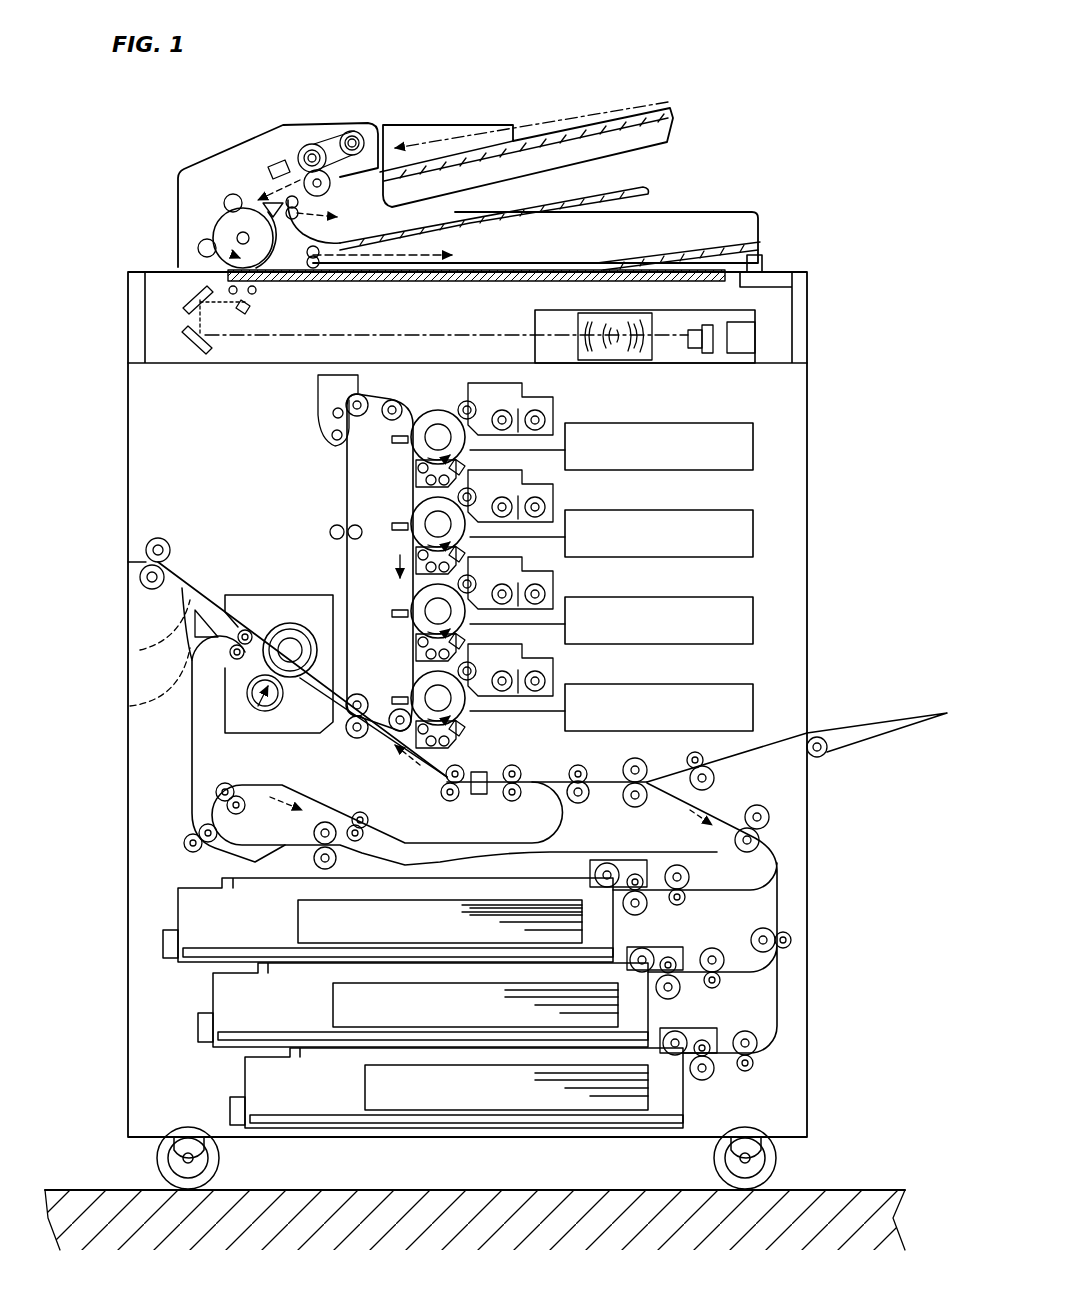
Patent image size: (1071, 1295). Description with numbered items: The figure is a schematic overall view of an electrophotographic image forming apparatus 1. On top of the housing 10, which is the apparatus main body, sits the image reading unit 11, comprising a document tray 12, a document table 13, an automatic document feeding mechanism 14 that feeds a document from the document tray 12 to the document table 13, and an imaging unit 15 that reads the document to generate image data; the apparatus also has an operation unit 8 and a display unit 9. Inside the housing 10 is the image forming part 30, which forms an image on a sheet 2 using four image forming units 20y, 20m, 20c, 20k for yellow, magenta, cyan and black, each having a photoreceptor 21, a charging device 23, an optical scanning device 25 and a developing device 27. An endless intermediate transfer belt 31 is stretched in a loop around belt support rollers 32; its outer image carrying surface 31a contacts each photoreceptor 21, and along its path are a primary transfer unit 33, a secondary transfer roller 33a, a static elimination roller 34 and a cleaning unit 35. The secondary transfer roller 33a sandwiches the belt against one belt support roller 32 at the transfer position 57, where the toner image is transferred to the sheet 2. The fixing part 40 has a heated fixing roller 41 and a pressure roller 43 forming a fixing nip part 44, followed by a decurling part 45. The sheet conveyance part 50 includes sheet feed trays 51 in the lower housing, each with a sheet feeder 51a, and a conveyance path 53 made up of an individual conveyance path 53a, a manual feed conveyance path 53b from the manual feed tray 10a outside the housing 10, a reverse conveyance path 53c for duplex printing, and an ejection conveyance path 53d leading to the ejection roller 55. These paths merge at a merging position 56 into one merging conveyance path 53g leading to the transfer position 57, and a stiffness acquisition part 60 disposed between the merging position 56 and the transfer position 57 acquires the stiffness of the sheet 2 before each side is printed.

The image forming apparatus 1 is at (53, 50).
The image reading unit 11 is at (492, 165).
The automatic document feeding mechanism 14 is at (236, 180).
The document tray 12 is at (558, 132).
The document table 13 is at (636, 248).
The operation unit 8 is at (782, 247).
The display unit 9 is at (778, 267).
The imaging unit 15 is at (795, 316).
The image forming part 30 is at (564, 560).
The image forming unit 20y is at (627, 437).
The image forming unit 20m is at (775, 530).
The image forming unit 20c is at (775, 618).
The image forming unit 20k is at (775, 706).
The photoreceptor 21 is at (446, 412).
The charging device 23 is at (470, 460).
The optical scanning device 25 is at (745, 423).
The developing device 27 is at (556, 412).
The intermediate transfer belt 31 is at (331, 551).
The image carrying surface 31a is at (344, 482).
The belt support roller 32 is at (388, 420).
The primary transfer unit 33 is at (398, 446).
The secondary transfer roller 33a is at (356, 740).
The static elimination roller 34 is at (332, 538).
The cleaning unit 35 is at (318, 382).
The fixing part 40 is at (272, 657).
The fixing roller 41 is at (290, 620).
The pressure roller 43 is at (274, 716).
The fixing nip part 44 is at (252, 717).
The decurling part 45 is at (214, 650).
The sheet conveyance part 50 is at (112, 777).
The sheet feed tray 51 is at (375, 973).
The sheet feeder 51a is at (660, 862).
The conveyance path 53 is at (488, 802).
The individual conveyance path 53a is at (744, 940).
The manual feed conveyance path 53b is at (797, 769).
The reverse conveyance path 53c is at (464, 800).
The ejection conveyance path 53d is at (238, 685).
The merging conveyance path 53g is at (508, 775).
The ejection roller 55 is at (146, 550).
The merging position 56 is at (527, 800).
The transfer position 57 is at (380, 752).
The stiffness acquisition part 60 is at (480, 772).
The housing 10 is at (128, 828).
The manual feed tray 10a is at (862, 742).
The sheet 2 is at (520, 880).